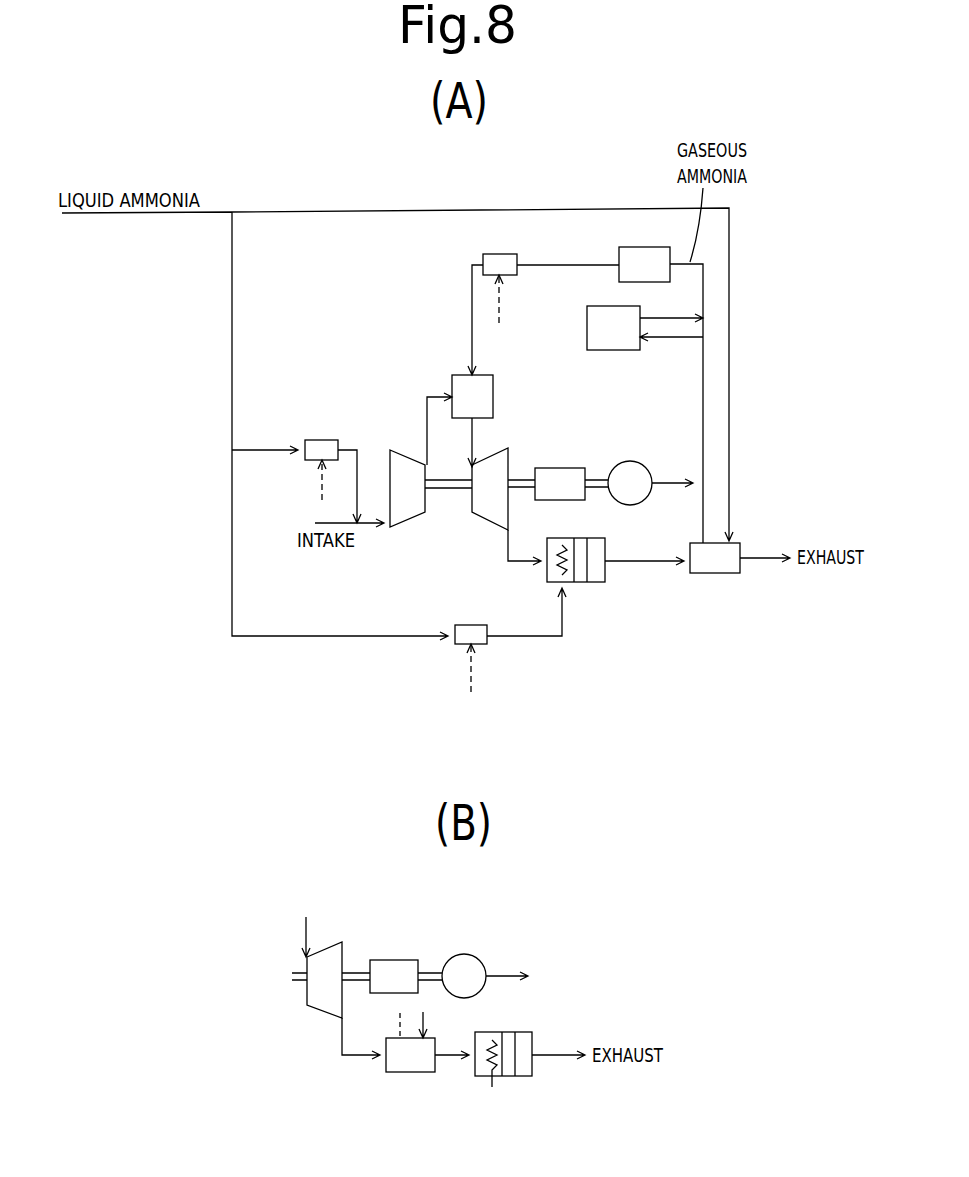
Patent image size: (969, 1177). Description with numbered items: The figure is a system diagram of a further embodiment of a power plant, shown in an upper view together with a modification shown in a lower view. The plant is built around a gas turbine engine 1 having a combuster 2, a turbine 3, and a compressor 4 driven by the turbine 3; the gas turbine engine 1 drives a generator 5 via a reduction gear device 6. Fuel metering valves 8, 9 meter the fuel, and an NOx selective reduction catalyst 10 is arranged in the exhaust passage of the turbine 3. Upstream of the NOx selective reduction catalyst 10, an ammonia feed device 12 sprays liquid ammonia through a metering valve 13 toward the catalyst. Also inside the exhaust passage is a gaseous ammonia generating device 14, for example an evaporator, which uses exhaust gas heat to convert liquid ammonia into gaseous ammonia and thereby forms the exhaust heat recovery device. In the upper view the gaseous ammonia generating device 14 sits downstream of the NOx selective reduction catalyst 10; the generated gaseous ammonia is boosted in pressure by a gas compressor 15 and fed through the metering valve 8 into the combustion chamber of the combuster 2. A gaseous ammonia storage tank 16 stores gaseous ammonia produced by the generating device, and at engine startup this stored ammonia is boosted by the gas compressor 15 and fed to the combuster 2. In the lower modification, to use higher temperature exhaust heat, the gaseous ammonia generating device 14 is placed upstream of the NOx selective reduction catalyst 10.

The gas turbine engine 1 is at (519, 440).
The combuster 2 is at (483, 378).
The turbine 3 is at (488, 505).
The compressor 4 is at (405, 505).
The generator 5 is at (630, 470).
The reduction gear device 6 is at (557, 477).
The fuel metering valve 8 is at (497, 260).
The fuel metering valve 9 is at (320, 440).
The NOx selective reduction catalyst 10 is at (580, 573).
The ammonia feed device 12 is at (560, 565).
The metering valve 13 is at (468, 628).
The gaseous ammonia generating device 14 is at (716, 573).
The gas compressor 15 is at (640, 257).
The gaseous ammonia storage tank 16 is at (608, 340).